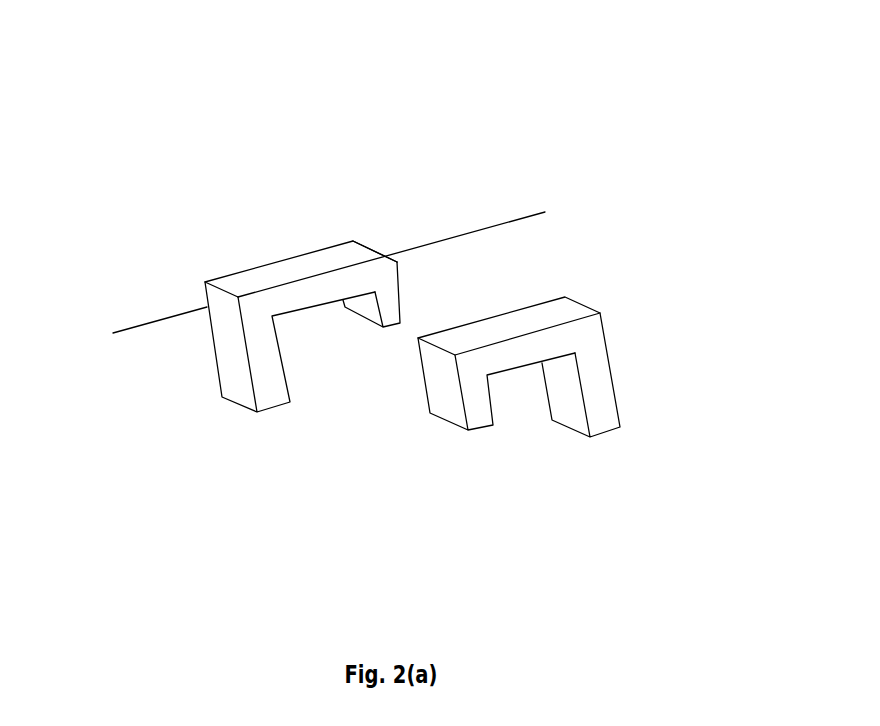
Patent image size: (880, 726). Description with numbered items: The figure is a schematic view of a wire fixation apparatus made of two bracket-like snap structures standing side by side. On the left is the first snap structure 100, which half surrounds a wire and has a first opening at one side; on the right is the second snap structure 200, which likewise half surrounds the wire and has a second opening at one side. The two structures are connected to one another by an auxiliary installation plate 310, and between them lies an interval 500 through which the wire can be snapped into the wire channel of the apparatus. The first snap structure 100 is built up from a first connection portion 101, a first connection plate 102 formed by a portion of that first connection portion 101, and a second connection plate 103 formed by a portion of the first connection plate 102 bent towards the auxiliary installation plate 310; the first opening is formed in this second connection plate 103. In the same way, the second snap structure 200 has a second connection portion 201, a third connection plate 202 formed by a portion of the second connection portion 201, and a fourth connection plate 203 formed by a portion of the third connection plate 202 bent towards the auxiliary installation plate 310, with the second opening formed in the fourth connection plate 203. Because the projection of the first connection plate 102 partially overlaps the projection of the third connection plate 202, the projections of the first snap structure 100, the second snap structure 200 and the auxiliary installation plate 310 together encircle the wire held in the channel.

The first snap structure 100 is at (278, 266).
The first connection portion 101 is at (222, 327).
The first connection plate 102 is at (293, 265).
The second connection plate 103 is at (383, 307).
The auxiliary installation plate 310 is at (409, 258).
The second snap structure 200 is at (622, 390).
The second connection portion 201 is at (602, 395).
The third connection plate 202 is at (572, 315).
The fourth connection plate 203 is at (482, 395).
The interval 500 is at (394, 358).